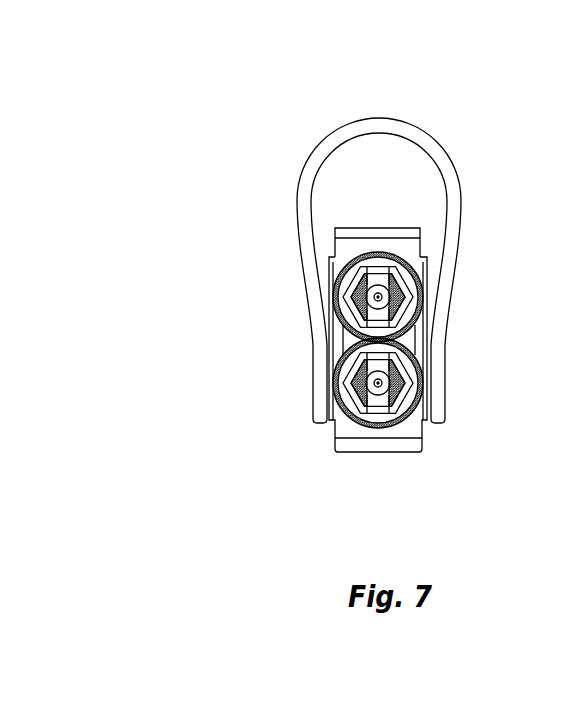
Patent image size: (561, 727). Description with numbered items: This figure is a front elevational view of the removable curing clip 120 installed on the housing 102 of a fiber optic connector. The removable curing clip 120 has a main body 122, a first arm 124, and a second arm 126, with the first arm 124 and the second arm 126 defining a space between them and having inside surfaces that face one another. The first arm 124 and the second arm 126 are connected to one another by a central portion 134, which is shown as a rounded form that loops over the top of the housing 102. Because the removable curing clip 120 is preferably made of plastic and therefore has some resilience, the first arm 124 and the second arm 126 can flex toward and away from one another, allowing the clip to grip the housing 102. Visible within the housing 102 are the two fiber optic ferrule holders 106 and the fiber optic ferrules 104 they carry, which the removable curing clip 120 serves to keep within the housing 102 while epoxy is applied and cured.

The removable curing clip 120 is at (429, 92).
The main body 122 is at (458, 165).
The central portion 134 is at (363, 127).
The second arm 126 is at (313, 391).
The first arm 124 is at (446, 394).
The housing 102 is at (427, 447).
The fiber optic ferrule holders 106 is at (415, 297).
The fiber optic ferrules 104 is at (388, 301).